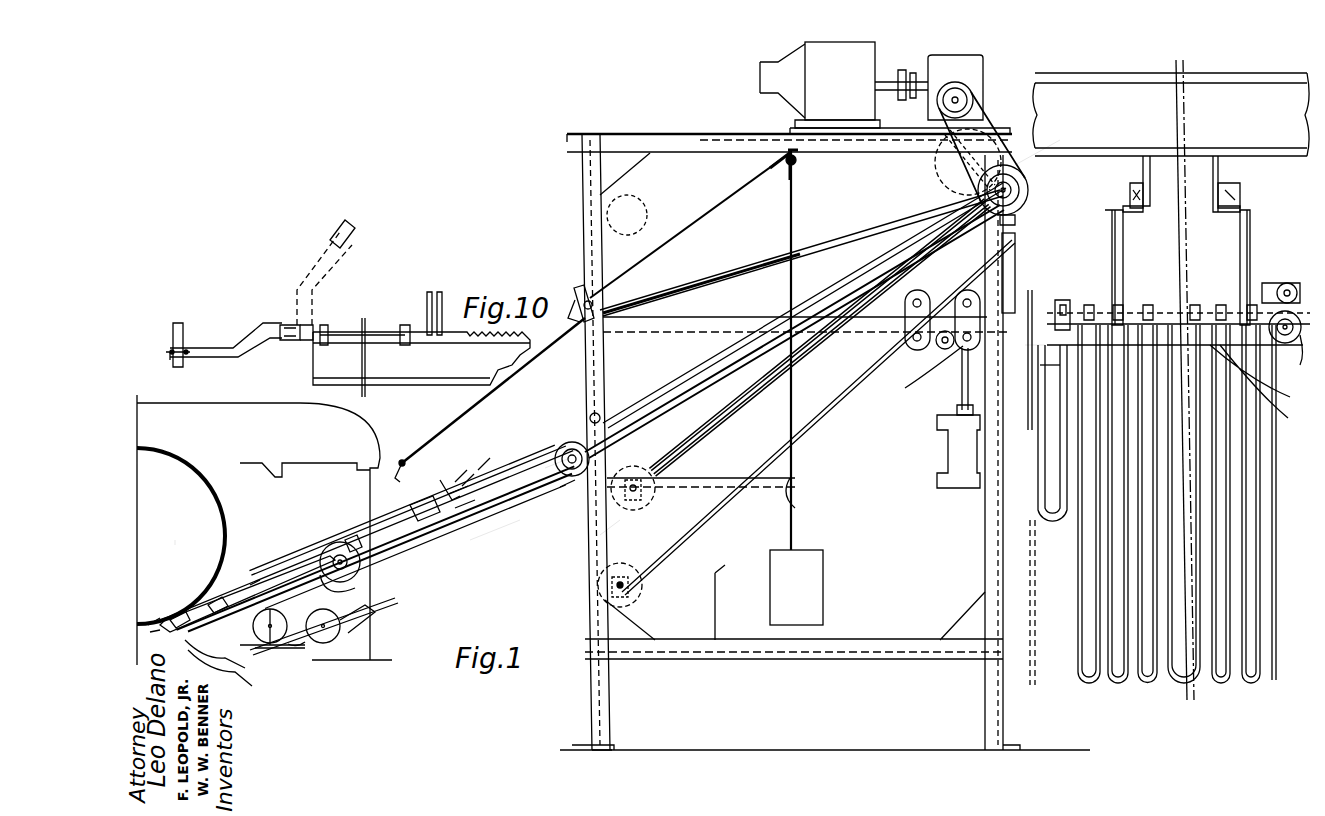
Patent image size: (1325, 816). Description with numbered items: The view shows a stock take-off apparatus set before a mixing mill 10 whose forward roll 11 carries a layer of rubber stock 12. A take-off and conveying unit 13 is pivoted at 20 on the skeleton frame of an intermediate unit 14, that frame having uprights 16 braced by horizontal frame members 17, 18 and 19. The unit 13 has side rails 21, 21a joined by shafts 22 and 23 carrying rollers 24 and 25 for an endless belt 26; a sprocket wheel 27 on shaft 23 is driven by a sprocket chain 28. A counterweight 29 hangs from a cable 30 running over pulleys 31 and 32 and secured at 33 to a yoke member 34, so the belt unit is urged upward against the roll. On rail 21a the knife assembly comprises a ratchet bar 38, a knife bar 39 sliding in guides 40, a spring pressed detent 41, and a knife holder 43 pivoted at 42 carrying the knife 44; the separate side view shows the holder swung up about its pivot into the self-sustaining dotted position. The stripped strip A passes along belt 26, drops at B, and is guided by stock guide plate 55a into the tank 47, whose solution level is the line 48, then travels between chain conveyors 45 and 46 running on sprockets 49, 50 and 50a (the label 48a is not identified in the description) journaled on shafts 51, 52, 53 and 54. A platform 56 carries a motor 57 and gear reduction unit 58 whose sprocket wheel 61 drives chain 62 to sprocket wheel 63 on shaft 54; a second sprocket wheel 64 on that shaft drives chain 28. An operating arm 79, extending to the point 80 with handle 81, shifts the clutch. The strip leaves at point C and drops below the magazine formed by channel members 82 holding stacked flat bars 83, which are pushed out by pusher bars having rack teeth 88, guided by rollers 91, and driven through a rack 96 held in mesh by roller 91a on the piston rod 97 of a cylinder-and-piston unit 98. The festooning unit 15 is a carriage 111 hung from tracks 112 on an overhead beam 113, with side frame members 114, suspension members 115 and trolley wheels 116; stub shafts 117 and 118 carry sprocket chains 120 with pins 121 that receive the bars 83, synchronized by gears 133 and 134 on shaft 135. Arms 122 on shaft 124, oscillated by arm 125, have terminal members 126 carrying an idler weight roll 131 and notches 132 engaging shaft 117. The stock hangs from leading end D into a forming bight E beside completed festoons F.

In FIG. 1, the mixing mill 10 is at (264, 530).
In FIG. 1, the forward roll 11 is at (172, 540).
In FIG. 1, the rubber stock 12 is at (222, 514).
In FIG. 1, the combined take-off and conveying unit 13 is at (495, 533).
In FIG. 1, the intermediate unit 14 is at (869, 475).
In FIG. 1, the movable carriage (festooning unit) 15 is at (1178, 298).
In FIG. 1, the vertical uprights 16 is at (582, 213).
In FIG. 1, the horizontal frame member 17 is at (665, 150).
In FIG. 1, the longitudinally extending frame member 18 is at (700, 322).
In FIG. 1, the horizontal frame member 19 is at (780, 648).
In FIG. 1, the pivot 20 is at (570, 483).
In FIG. 1, the side rail member 21 is at (508, 545).
In FIG. 10, the side rail member 21a is at (385, 380).
In FIG. 1, the fore shaft 22 is at (338, 550).
In FIG. 1, the rear shaft 23 is at (552, 462).
In FIG. 1, the roller 24 is at (330, 578).
In FIG. 1, the roller 25 is at (568, 440).
In FIG. 1, the endless belt 26 is at (385, 590).
In FIG. 1, the sprocket wheel 27 is at (606, 444).
In FIG. 1, the sprocket chain 28 is at (660, 390).
In FIG. 1, the counterweight 29 is at (823, 568).
In FIG. 1, the cable 30 is at (500, 412).
In FIG. 1, the pulley 31 is at (798, 178).
In FIG. 1, the pulley 32 is at (770, 165).
In FIG. 1, the cable attachment 33 is at (403, 460).
In FIG. 1, the yoke member 34 is at (450, 480).
In FIG. 1, the ratchet bar 38 is at (505, 472).
In FIG. 10, the ratchet bar 38 is at (490, 340).
In FIG. 1, the knife bar 39 is at (255, 583).
In FIG. 10, the knife bar 39 is at (362, 332).
In FIG. 1, the guides 40 is at (352, 540).
In FIG. 10, the guides 40 is at (325, 323).
In FIG. 1, the spring pressed detent 41 is at (462, 478).
In FIG. 10, the spring pressed detent 41 is at (442, 305).
In FIG. 1, the pivot 42 is at (228, 608).
In FIG. 10, the pivot 42 is at (285, 343).
In FIG. 1, the knife holder 43 is at (204, 630).
In FIG. 10, the knife holder 43 is at (218, 348).
In FIG. 1, the knife 44 is at (218, 667).
In FIG. 10, the knife 44 is at (170, 345).
In FIG. 1, the upper chain-type conveyor 45 is at (870, 240).
In FIG. 1, the lower chain-type conveyor 46 is at (850, 386).
In FIG. 1, the tank 47 is at (735, 565).
In FIG. 1, the solution level line 48 is at (797, 500).
In FIG. 1, the chain 48a is at (968, 205).
In FIG. 1, the forward sprocket wheel 49 is at (635, 468).
In FIG. 1, the forward sprocket wheel 50 is at (645, 578).
In FIG. 1, the upper sprocket wheel 50a is at (1025, 178).
In FIG. 1, the shaft 51 is at (600, 535).
In FIG. 1, the shaft 52 is at (608, 598).
In FIG. 1, the upper shaft 53 is at (990, 120).
In FIG. 1, the chain-drive shaft 54 is at (1028, 192).
In FIG. 1, the stock guide plate 55a is at (625, 523).
In FIG. 1, the platform 56 is at (880, 130).
In FIG. 1, the motor 57 is at (820, 85).
In FIG. 1, the gear reduction unit 58 is at (929, 87).
In FIG. 1, the sprocket wheel 61 is at (970, 105).
In FIG. 1, the sprocket drive chain 62 is at (1010, 155).
In FIG. 1, the sprocket wheel 63 is at (1025, 168).
In FIG. 1, the second sprocket wheel 64 is at (1010, 222).
In FIG. 1, the operating arm 79 is at (740, 275).
In FIG. 1, the arm end point 80 is at (582, 282).
In FIG. 1, the operating handle 81 is at (560, 290).
In FIG. 1, the channel member 82 is at (1015, 265).
In FIG. 1, the flat bars 83 is at (1125, 308).
In FIG. 1, the rack teeth 88 is at (1020, 300).
In FIG. 1, the rollers 91 is at (965, 285).
In FIG. 1, the roller 91a is at (940, 348).
In FIG. 1, the rack 96 is at (905, 388).
In FIG. 1, the piston rod 97 is at (955, 400).
In FIG. 1, the cylinder-and-piston unit 98 is at (958, 451).
In FIG. 1, the carriage 111 is at (1265, 282).
In FIG. 1, the tracks 112 is at (1210, 176).
In FIG. 1, the overhead beam 113 is at (1171, 380).
In FIG. 1, the side frame members 114 is at (1088, 305).
In FIG. 1, the vertical suspension members 115 is at (1123, 240).
In FIG. 1, the trolley wheel 116 is at (1130, 190).
In FIG. 1, the forward stub shafts 117 is at (1049, 515).
In FIG. 1, the rear stub shafts 118 is at (1297, 351).
In FIG. 1, the endless sprocket chain 120 is at (1292, 399).
In FIG. 1, the dogs or pins 121 is at (1170, 318).
In FIG. 1, the arm 122 is at (1052, 403).
In FIG. 1, the shaft 124 is at (1025, 355).
In FIG. 1, the operating arm 125 is at (1032, 375).
In FIG. 1, the terminal members 126 is at (1068, 298).
In FIG. 1, the idler weight roll 131 is at (1042, 306).
In FIG. 1, the notches 132 is at (1088, 320).
In FIG. 1, the gear 133 is at (1285, 282).
In FIG. 1, the gear 134 is at (1306, 276).
In FIG. 1, the shaft 135 is at (1245, 318).
In FIG. 1, the strip of stock A is at (300, 575).
In FIG. 1, the downward feed point B is at (575, 500).
In FIG. 1, the discharge point C is at (1030, 185).
In FIG. 1, the leading end of strip D is at (1033, 685).
In FIG. 1, the bight of looped section E is at (1048, 522).
In FIG. 1, the completely looped sections F is at (1200, 515).